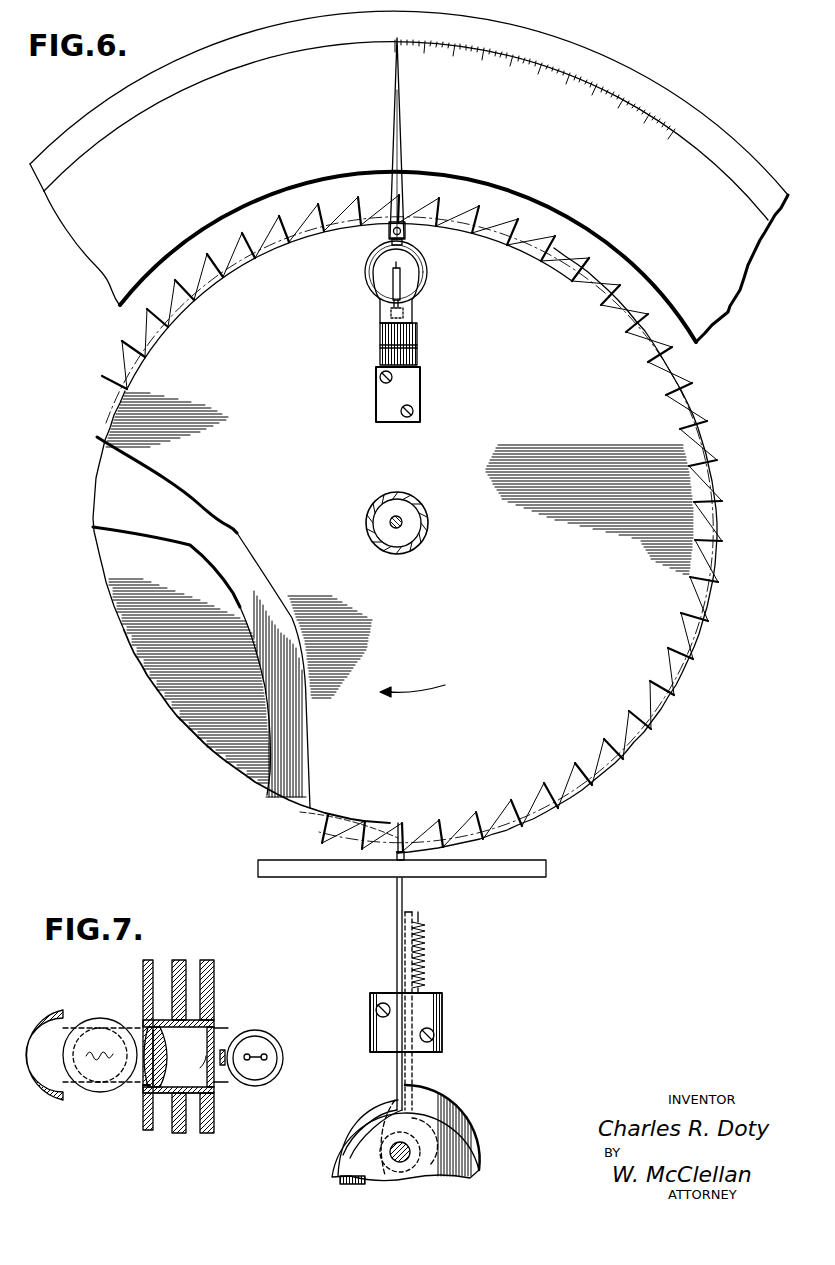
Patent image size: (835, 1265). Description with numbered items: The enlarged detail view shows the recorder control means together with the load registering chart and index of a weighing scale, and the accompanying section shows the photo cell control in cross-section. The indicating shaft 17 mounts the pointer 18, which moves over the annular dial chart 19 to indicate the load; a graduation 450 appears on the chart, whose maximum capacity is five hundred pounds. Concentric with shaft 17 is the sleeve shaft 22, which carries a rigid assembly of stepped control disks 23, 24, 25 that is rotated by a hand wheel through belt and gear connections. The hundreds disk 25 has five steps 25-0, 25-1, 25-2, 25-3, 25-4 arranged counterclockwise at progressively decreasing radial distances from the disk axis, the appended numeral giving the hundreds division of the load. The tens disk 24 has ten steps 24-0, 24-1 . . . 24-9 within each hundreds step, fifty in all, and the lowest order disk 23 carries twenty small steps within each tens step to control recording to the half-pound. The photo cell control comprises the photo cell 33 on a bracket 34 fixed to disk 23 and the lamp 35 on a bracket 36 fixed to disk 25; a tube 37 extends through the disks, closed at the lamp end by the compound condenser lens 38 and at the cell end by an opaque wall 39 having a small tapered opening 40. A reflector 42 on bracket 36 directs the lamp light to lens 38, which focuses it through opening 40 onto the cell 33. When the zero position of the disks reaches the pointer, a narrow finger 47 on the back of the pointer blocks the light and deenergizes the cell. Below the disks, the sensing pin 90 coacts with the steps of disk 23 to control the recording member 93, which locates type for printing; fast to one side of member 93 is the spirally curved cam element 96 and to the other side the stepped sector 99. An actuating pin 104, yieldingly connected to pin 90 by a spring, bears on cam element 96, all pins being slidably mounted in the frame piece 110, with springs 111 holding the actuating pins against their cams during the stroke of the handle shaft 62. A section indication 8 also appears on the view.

In FIG. 6, the section line 8- 8 is at (375, 797).
In FIG. 6, the shaft 17 is at (404, 524).
In FIG. 6, the pointer 18 is at (405, 120).
In FIG. 6, the annular dial chart 19 is at (700, 297).
In FIG. 6, the sleeve shaft 22 is at (410, 492).
In FIG. 6, the lowest order disk 23 is at (148, 455).
In FIG. 7, the lowest order disk 23 is at (214, 966).
In FIG. 6, the tens disk 24 is at (157, 522).
In FIG. 7, the tens disk 24 is at (186, 962).
In FIG. 6, the hundreds disk 25 is at (137, 635).
In FIG. 7, the hundreds disk 25 is at (143, 967).
In FIG. 6, the hundreds step 25-0 is at (668, 726).
In FIG. 6, the hundreds step 25-1 is at (704, 592).
In FIG. 6, the hundreds step 25-2 is at (585, 257).
In FIG. 6, the hundreds step 25-3 is at (207, 282).
In FIG. 6, the hundreds step 25-4 is at (165, 706).
In FIG. 6, the tens step 24-0 is at (692, 592).
In FIG. 6, the tens step 24-1 is at (482, 806).
In FIG. 6, the tens step 24-9 is at (676, 628).
In FIG. 6, the photo cell 33 is at (385, 276).
In FIG. 7, the photo cell 33 is at (280, 1047).
In FIG. 6, the bracket 34 is at (393, 396).
In FIG. 7, the bracket 34 is at (216, 1038).
In FIG. 7, the lamp 35 is at (92, 1018).
In FIG. 7, the bracket 36 is at (138, 1088).
In FIG. 6, the tube 37 is at (376, 260).
In FIG. 7, the tube 37 is at (193, 1095).
In FIG. 7, the compound condenser lens 38 is at (150, 1048).
In FIG. 7, the opaque wall 39 is at (212, 1033).
In FIG. 7, the tapered opening 40 is at (193, 1071).
In FIG. 7, the reflector 42 is at (33, 1082).
In FIG. 6, the finger 47 is at (423, 262).
In FIG. 7, the finger 47 is at (224, 1068).
In FIG. 6, the scale graduation 450 is at (120, 128).
In FIG. 6, the shaft 62 is at (405, 1164).
In FIG. 6, the sensing pin 90 is at (396, 960).
In FIG. 6, the recording member 93 is at (463, 1158).
In FIG. 6, the cam element 96 is at (367, 1118).
In FIG. 6, the stepped sector 99 is at (368, 1140).
In FIG. 6, the actuating pin 104 is at (413, 940).
In FIG. 6, the frame piece 110 is at (442, 1006).
In FIG. 6, the spring 111 is at (426, 963).